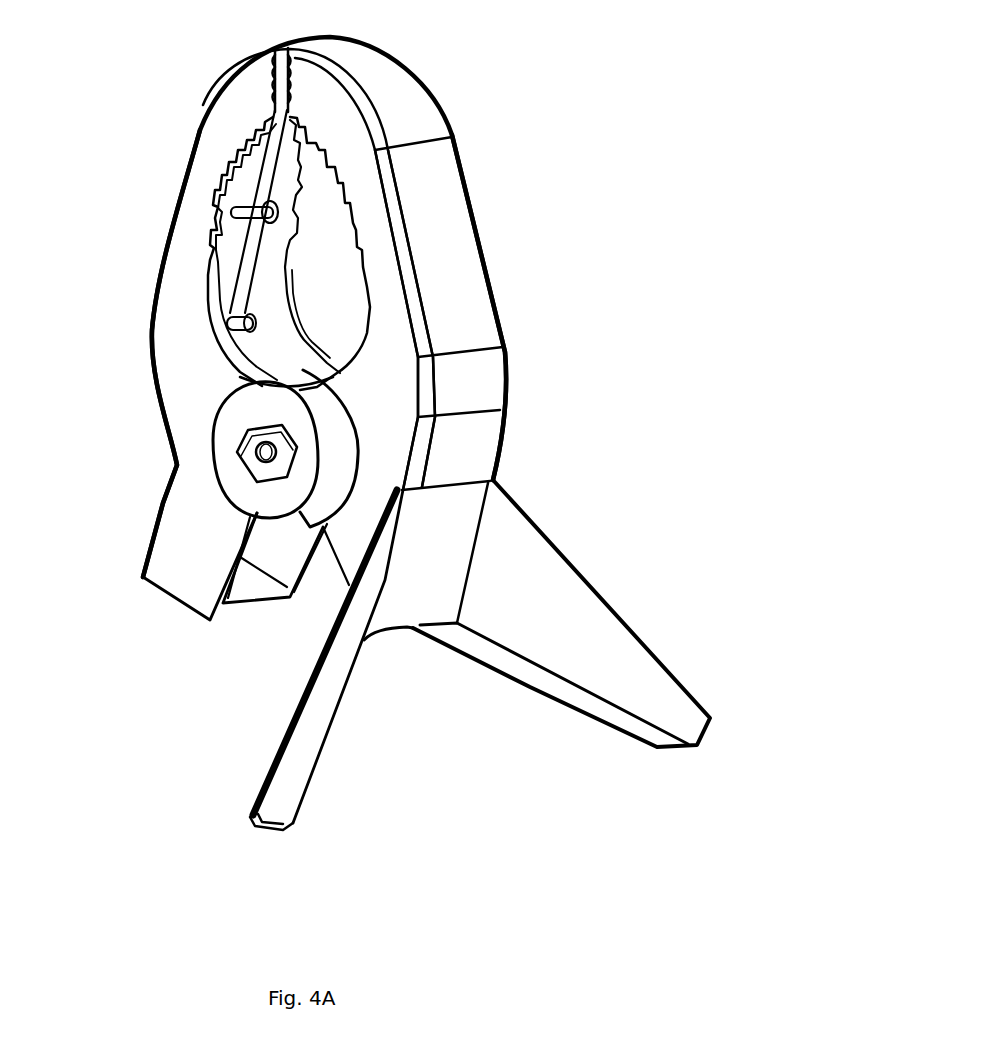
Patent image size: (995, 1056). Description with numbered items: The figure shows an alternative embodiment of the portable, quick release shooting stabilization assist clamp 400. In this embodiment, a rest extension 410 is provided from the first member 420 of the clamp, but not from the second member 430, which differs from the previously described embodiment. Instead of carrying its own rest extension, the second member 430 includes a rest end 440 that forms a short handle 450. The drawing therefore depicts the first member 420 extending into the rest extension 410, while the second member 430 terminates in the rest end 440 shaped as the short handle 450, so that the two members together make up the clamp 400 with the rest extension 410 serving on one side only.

The portable, quick release shooting stabilization assist clamp 400 is at (487, 129).
The rest extension 410 is at (480, 655).
The first member 420 is at (522, 353).
The second member 430 is at (135, 347).
The rest end 440 is at (264, 451).
The short handle 450 is at (262, 558).